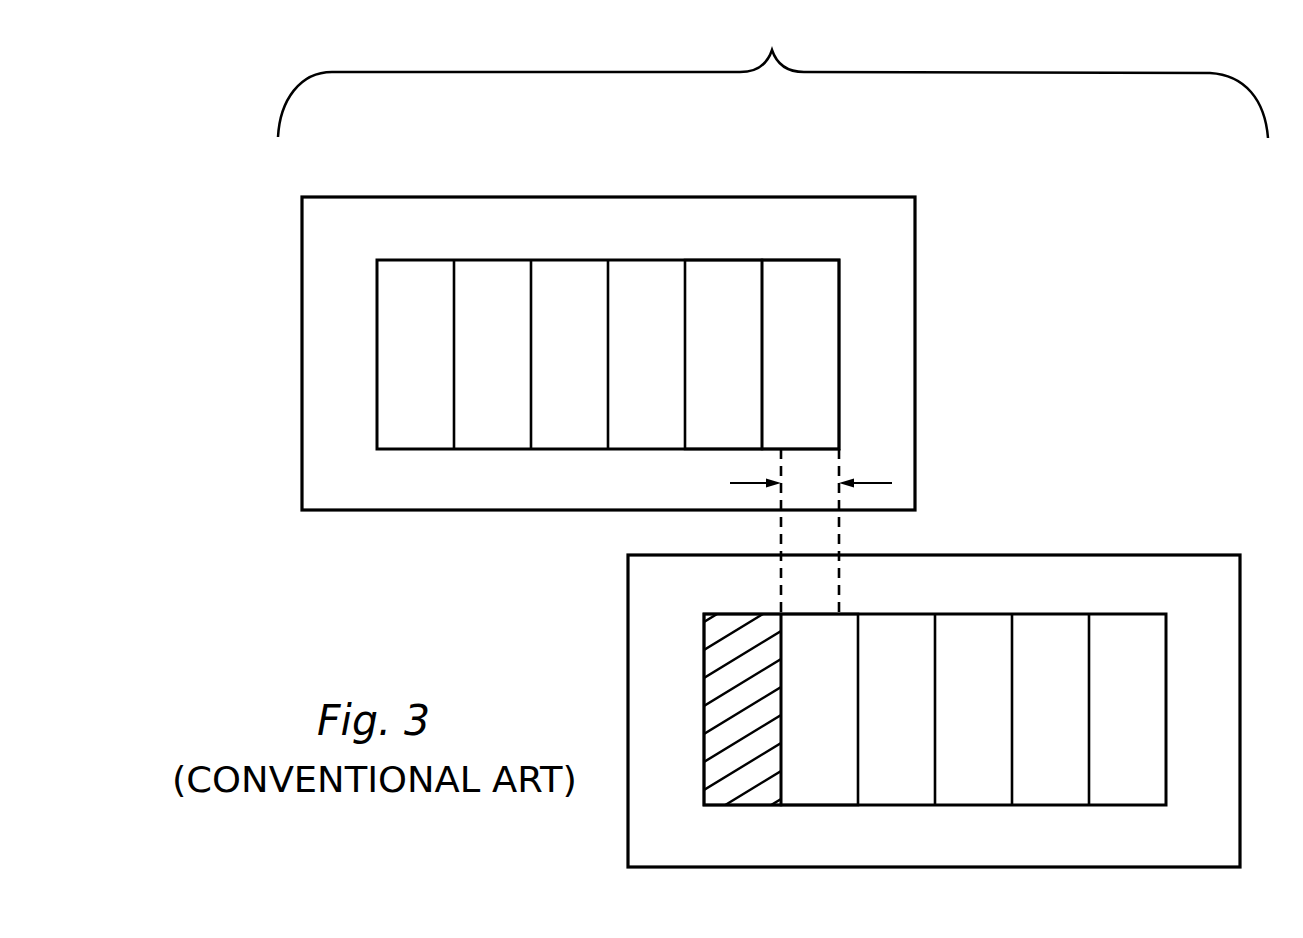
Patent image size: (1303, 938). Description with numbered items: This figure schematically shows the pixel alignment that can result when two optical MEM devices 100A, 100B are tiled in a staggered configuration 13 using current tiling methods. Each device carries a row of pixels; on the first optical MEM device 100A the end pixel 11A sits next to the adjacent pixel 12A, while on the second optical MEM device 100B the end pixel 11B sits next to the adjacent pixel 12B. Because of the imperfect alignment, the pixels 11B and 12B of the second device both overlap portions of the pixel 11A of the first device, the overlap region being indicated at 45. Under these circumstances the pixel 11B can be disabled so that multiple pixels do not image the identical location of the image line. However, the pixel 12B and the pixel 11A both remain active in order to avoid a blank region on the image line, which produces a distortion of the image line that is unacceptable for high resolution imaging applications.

The staggered configuration 13 is at (773, 77).
The optical MEM device 100A is at (380, 197).
The optical MEM device 100B is at (1123, 555).
The pixel 11A is at (797, 260).
The pixel 12A is at (707, 260).
The pixel 11B is at (735, 806).
The pixel 12B is at (817, 806).
The pixel offset between panels 45 is at (872, 483).